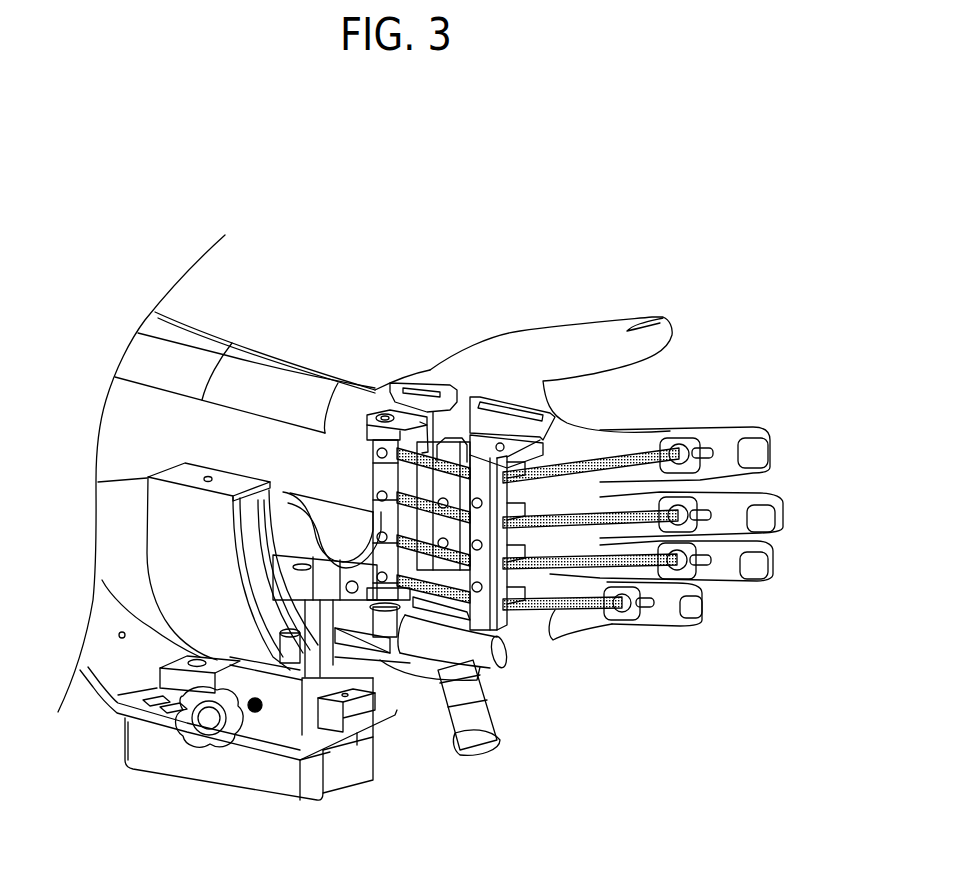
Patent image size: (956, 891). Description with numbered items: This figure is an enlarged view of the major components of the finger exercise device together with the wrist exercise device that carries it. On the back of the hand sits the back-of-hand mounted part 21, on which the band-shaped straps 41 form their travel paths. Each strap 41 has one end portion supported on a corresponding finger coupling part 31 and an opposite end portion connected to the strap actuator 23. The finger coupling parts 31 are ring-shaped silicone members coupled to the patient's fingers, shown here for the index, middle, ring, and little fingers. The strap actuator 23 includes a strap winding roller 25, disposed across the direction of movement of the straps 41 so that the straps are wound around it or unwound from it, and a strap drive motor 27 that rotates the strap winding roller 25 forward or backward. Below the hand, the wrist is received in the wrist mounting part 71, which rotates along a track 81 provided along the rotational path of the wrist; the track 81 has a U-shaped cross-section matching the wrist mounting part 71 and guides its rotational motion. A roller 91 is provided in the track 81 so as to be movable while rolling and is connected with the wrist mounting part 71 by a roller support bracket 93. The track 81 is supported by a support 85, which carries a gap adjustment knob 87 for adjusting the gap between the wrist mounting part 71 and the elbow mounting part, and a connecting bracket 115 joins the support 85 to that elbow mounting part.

The back-of-hand mounted part 21 is at (497, 420).
The strap actuator 23 is at (410, 320).
The strap winding roller 25 is at (382, 478).
The strap drive motor 27 is at (392, 415).
The finger coupling parts 31 is at (600, 482).
The straps 41 is at (443, 443).
The wrist mounting part 71 is at (287, 530).
The track 81 is at (183, 557).
The support 85 is at (273, 773).
The gap adjustment knob 87 is at (210, 720).
The roller 91 is at (393, 723).
The roller support bracket 93 is at (467, 748).
The connecting bracket 115 is at (110, 670).